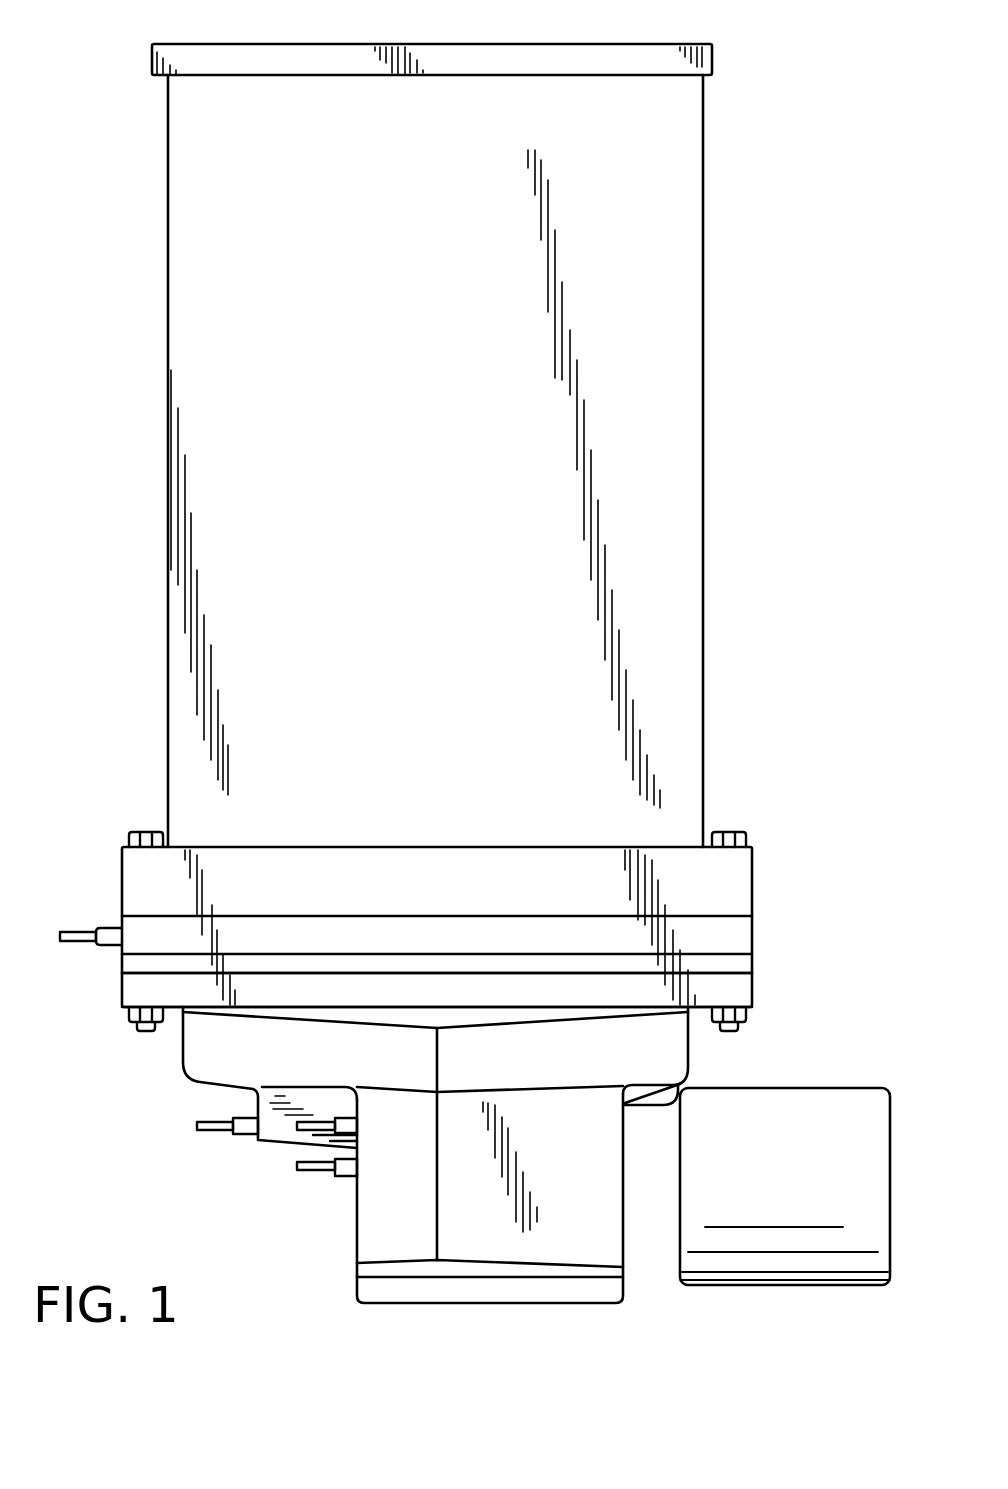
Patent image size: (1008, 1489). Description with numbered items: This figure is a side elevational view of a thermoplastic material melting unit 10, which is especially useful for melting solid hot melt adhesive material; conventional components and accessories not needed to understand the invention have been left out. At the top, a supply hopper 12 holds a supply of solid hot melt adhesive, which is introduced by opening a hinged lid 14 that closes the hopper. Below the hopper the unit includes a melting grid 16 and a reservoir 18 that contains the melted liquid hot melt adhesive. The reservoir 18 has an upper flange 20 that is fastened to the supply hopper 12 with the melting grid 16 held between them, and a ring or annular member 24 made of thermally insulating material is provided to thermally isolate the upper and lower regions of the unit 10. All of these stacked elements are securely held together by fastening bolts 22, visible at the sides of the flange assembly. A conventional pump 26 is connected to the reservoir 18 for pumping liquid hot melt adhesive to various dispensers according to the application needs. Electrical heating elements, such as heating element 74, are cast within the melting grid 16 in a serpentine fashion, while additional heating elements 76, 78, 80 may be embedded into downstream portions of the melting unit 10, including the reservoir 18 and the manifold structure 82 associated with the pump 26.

The thermoplastic material melting unit 10 is at (830, 483).
The supply hopper 12 is at (167, 402).
The hinged lid 14 is at (553, 44).
The melting grid 16 is at (762, 939).
The reservoir 18 is at (175, 1052).
The upper flange 20 is at (737, 998).
The fastening bolts 22 is at (142, 832).
The ring or annular member 24 is at (122, 968).
The pump 26 is at (848, 1088).
The electrical heating element 74 is at (112, 925).
The heating element 76 is at (215, 1130).
The heating element 78 is at (320, 1120).
The heating element 80 is at (325, 1174).
The manifold structure 82 is at (364, 1248).